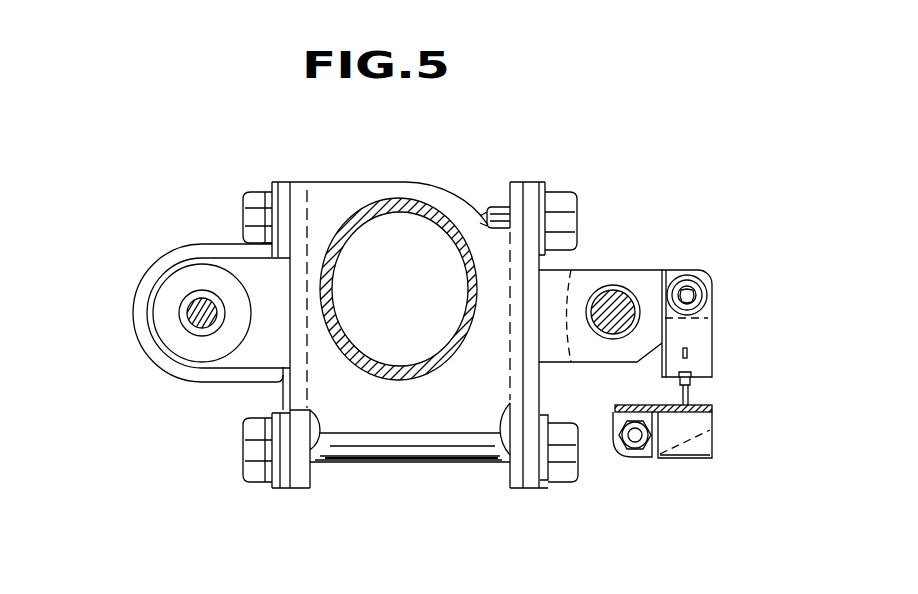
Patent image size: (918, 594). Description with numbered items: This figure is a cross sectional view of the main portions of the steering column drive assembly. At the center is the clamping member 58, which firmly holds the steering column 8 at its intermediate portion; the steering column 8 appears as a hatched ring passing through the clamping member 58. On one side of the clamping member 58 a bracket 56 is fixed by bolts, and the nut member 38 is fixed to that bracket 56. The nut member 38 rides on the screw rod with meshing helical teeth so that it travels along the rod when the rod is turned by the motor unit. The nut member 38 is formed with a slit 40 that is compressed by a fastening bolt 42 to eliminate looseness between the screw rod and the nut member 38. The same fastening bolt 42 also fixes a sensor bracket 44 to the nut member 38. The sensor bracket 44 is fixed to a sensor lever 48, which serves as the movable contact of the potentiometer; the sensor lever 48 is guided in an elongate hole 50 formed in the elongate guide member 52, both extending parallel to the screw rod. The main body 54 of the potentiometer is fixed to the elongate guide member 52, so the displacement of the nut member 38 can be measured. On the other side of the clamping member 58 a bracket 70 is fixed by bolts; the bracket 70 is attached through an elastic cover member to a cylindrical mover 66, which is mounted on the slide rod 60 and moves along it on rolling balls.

The steering column 8 is at (418, 205).
The nut member 38 is at (642, 270).
The slit 40 is at (577, 298).
The fastening bolt 42 is at (702, 276).
The sensor bracket 44 is at (703, 348).
The sensor lever 48 is at (692, 392).
The elongate hole 50 is at (673, 407).
The elongate guide member 52 is at (627, 405).
The main body 54 is at (697, 426).
The bracket 56 is at (530, 195).
The clamping member 58 is at (370, 193).
The slide rod 60 is at (197, 309).
The cylindrical mover 66 is at (180, 335).
The bracket 70 is at (162, 270).